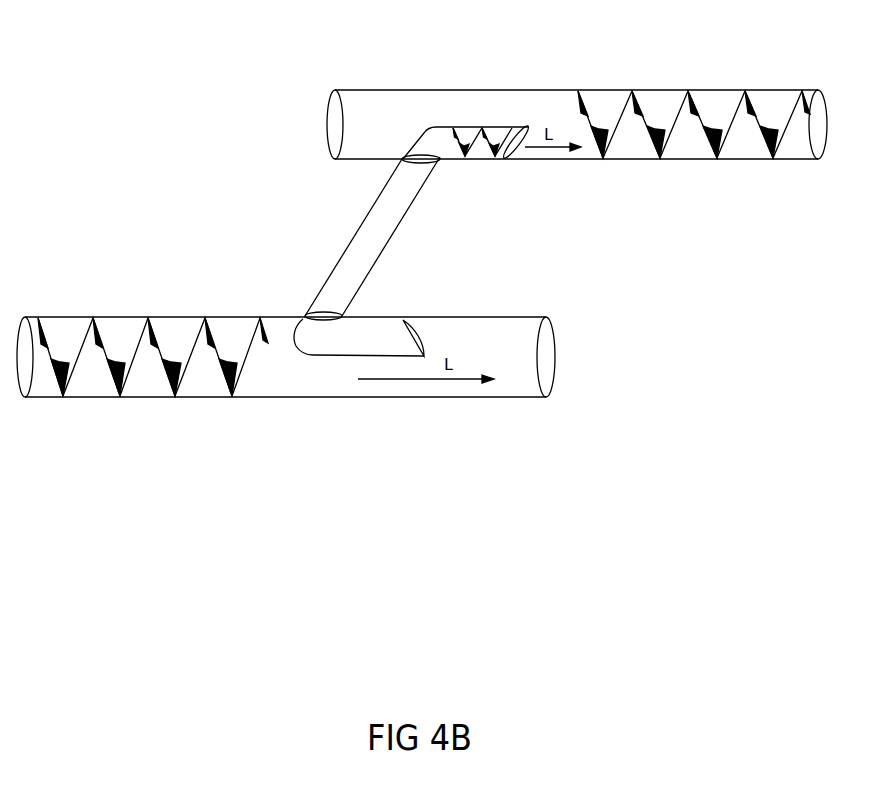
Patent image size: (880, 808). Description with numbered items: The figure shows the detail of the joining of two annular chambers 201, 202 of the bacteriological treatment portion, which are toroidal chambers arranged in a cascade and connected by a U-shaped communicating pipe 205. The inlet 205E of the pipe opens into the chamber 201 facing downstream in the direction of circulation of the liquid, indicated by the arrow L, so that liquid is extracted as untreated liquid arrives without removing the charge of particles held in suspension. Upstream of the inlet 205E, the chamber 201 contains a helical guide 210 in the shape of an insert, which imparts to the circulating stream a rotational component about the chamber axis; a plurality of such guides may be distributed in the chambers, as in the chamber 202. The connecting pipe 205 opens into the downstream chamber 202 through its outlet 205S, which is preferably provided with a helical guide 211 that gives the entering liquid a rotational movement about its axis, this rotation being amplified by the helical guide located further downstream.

The annular chamber 201 is at (420, 397).
The annular chamber 202 is at (515, 90).
The U-shaped communicating pipe 205 is at (352, 238).
The outlet of connecting pipe 205S is at (517, 160).
The inlet of connecting pipe 205E is at (410, 323).
The helical guide 210 is at (723, 155).
The helical guide 211 is at (461, 160).